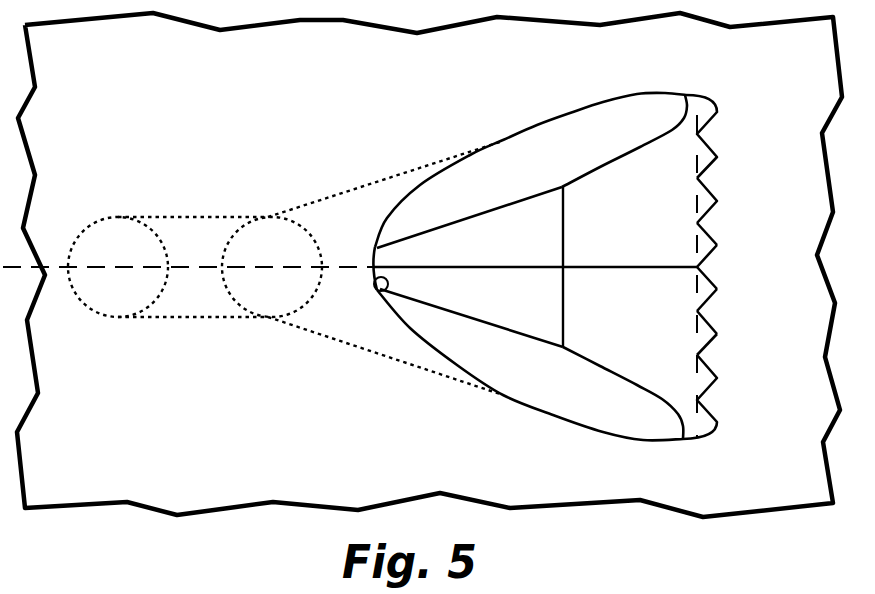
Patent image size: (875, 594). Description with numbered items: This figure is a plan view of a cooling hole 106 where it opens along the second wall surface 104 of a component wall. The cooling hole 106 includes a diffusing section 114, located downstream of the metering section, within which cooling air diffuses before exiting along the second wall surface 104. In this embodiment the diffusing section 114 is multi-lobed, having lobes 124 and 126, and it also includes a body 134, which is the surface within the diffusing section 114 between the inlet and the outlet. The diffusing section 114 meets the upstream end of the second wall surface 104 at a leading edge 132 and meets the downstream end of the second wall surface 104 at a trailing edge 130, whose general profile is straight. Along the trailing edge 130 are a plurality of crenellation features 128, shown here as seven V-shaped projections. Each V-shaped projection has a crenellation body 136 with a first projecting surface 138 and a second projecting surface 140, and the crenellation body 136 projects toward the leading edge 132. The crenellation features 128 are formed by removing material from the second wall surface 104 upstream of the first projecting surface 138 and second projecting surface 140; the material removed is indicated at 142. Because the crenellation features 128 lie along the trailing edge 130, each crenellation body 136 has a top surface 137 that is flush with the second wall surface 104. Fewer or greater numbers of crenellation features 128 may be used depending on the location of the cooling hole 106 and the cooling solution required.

The second wall surface 104 is at (92, 62).
The cooling hole 106 is at (514, 278).
The diffusing section 114 is at (343, 226).
The lobe 124 is at (600, 157).
The lobe 126 is at (582, 400).
The crenellation features 128 is at (699, 133).
The trailing edge 130 is at (702, 234).
The leading edge 132 is at (386, 298).
The body 134 is at (504, 253).
The crenellation body 136 is at (705, 267).
The top surface 137 is at (705, 312).
The first projecting surface 138 is at (708, 298).
The second projecting surface 140 is at (698, 335).
The material removed 142 is at (701, 201).